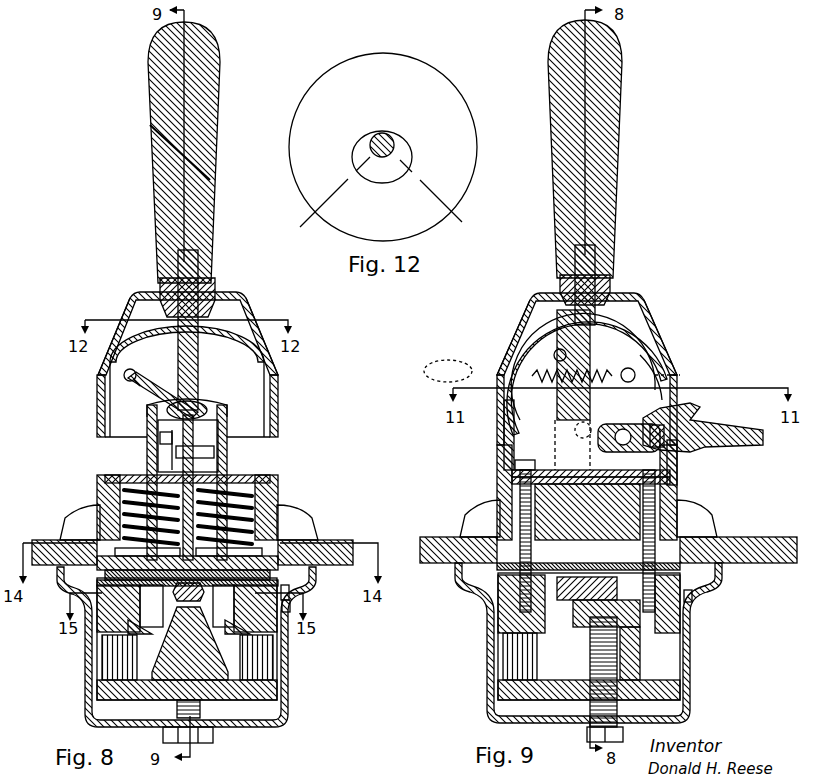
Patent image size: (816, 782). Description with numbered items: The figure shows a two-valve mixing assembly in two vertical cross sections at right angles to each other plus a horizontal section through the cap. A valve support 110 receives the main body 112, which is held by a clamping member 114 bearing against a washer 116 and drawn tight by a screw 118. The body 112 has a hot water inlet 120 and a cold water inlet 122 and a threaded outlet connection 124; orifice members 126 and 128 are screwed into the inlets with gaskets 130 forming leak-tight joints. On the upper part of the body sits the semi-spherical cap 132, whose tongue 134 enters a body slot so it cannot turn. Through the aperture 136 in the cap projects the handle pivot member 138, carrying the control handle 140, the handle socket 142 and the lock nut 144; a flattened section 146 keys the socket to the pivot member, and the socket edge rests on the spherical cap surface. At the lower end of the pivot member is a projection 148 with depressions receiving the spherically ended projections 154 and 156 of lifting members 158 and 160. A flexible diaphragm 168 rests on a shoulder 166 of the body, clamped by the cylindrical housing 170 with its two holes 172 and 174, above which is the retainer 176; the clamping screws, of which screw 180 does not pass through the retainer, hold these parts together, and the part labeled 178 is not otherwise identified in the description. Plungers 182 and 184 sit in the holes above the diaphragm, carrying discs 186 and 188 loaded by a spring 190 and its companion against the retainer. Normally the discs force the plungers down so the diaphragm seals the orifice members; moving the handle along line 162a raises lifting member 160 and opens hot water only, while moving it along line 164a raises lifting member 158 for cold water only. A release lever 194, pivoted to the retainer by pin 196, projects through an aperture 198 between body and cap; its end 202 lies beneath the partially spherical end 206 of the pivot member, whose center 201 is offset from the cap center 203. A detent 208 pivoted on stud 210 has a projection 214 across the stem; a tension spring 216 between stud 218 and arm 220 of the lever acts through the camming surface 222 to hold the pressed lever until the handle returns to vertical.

In FIG. 8, the valve support 110 is at (68, 545).
In FIG. 9, the valve support 110 is at (468, 541).
In FIG. 8, the main body 112 is at (288, 695).
In FIG. 9, the main body 112 is at (520, 689).
In FIG. 8, the clamping member 114 is at (290, 715).
In FIG. 9, the clamping member 114 is at (692, 654).
In FIG. 8, the washer 116 is at (300, 577).
In FIG. 9, the washer 116 is at (710, 569).
In FIG. 8, the screw 118 is at (216, 741).
In FIG. 9, the screw 118 is at (680, 708).
In FIG. 8, the hot water inlet 120 is at (110, 672).
In FIG. 8, the cold water inlet 122 is at (265, 672).
In FIG. 9, the outlet connection 124 is at (520, 666).
In FIG. 8, the hot water orifice member 126 is at (108, 636).
In FIG. 8, the cold water orifice member 128 is at (280, 630).
In FIG. 8, the gaskets 130 is at (106, 651).
In FIG. 8, the semi-spherical cap 132 is at (278, 386).
In FIG. 12, the semi-spherical cap 132 is at (477, 166).
In FIG. 9, the semi-spherical cap 132 is at (543, 340).
In FIG. 9, the tongue 134 is at (498, 448).
In FIG. 8, the aperture 136 is at (204, 324).
In FIG. 12, the aperture 136 is at (412, 158).
In FIG. 9, the aperture 136 is at (660, 336).
In FIG. 8, the handle pivot member 138 is at (160, 273).
In FIG. 12, the handle pivot member 138 is at (395, 140).
In FIG. 9, the handle pivot member 138 is at (606, 323).
In FIG. 8, the control handle 140 is at (214, 182).
In FIG. 9, the control handle 140 is at (617, 178).
In FIG. 8, the handle socket 142 is at (274, 366).
In FIG. 9, the handle socket 142 is at (661, 342).
In FIG. 8, the lock nut 144 is at (222, 296).
In FIG. 9, the lock nut 144 is at (627, 299).
In FIG. 9, the flattened section 146 is at (608, 281).
In FIG. 8, the projection 148 is at (150, 413).
In FIG. 9, the projection 148 is at (502, 406).
In FIG. 8, the spherically ended projection 154 is at (200, 408).
In FIG. 8, the spherically ended projection 156 is at (131, 382).
In FIG. 8, the lifting member 158 is at (222, 428).
In FIG. 8, the lifting member 160 is at (156, 446).
In FIG. 12, the line 162a is at (300, 222).
In FIG. 12, the line 164a is at (456, 218).
In FIG. 8, the shoulder 166 is at (306, 603).
In FIG. 9, the shoulder 166 is at (692, 592).
In FIG. 8, the flexible diaphragm 168 is at (296, 593).
In FIG. 9, the flexible diaphragm 168 is at (490, 606).
In FIG. 8, the cylindrical housing 170 is at (263, 507).
In FIG. 9, the cylindrical housing 170 is at (676, 502).
In FIG. 8, the cylindrical hole 172 is at (268, 489).
In FIG. 8, the cylindrical hole 174 is at (110, 498).
In FIG. 8, the retainer 176 is at (240, 476).
In FIG. 9, the retainer 176 is at (675, 471).
In FIG. 9, the valve body 178 is at (505, 502).
In FIG. 9, the screw 180 is at (675, 484).
In FIG. 8, the plunger 182 is at (300, 539).
In FIG. 8, the plunger 184 is at (108, 586).
In FIG. 8, the disc 186 is at (313, 522).
In FIG. 8, the disc 188 is at (80, 527).
In FIG. 8, the spring 190 is at (262, 481).
In FIG. 9, the release lever 194 is at (718, 428).
In FIG. 9, the pin 196 is at (560, 440).
In FIG. 9, the aperture 198 is at (680, 441).
In FIG. 9, the center 201 is at (601, 380).
In FIG. 9, the end 202 is at (668, 408).
In FIG. 9, the center 203 is at (685, 374).
In FIG. 9, the partially spherical end 206 is at (540, 426).
In FIG. 9, the detent 208 is at (554, 357).
In FIG. 9, the stud 210 is at (540, 353).
In FIG. 9, the projection 214 is at (520, 464).
In FIG. 9, the tension spring 216 is at (593, 365).
In FIG. 9, the stud 218 is at (497, 381).
In FIG. 9, the arm 220 is at (660, 371).
In FIG. 9, the surface 222 is at (652, 528).